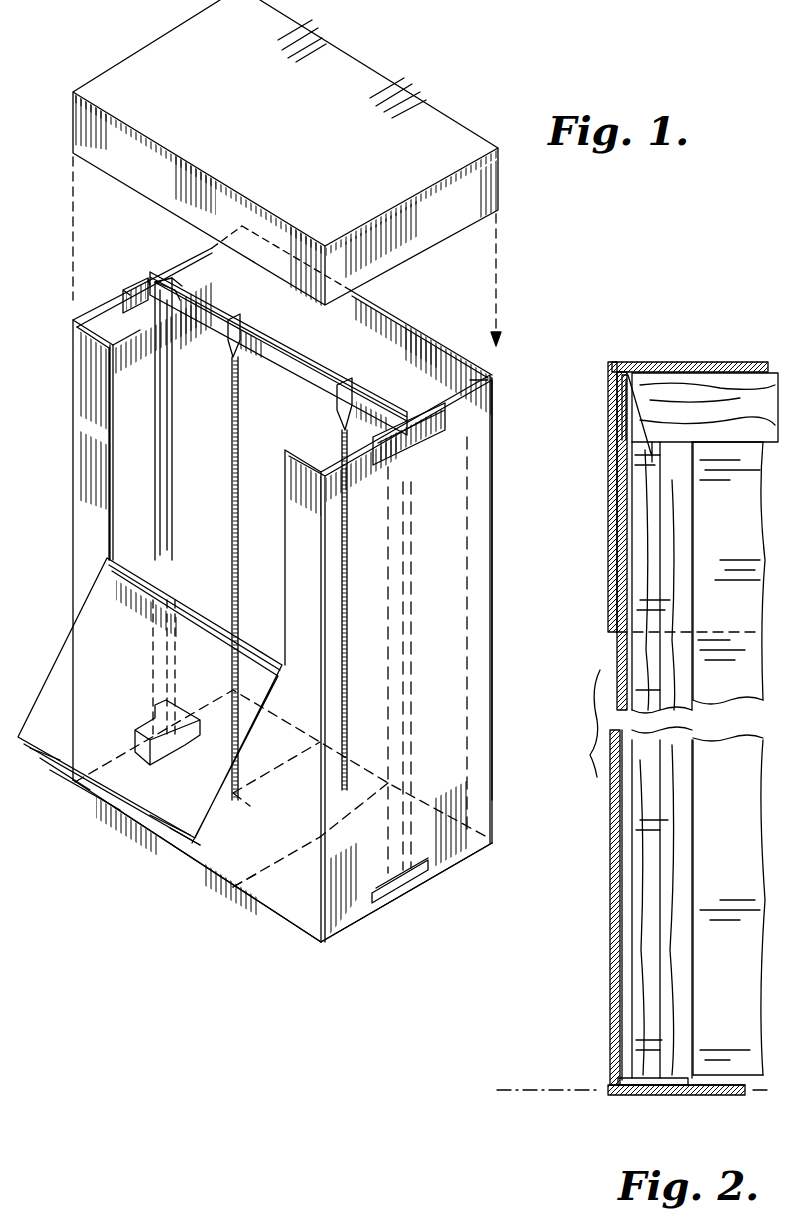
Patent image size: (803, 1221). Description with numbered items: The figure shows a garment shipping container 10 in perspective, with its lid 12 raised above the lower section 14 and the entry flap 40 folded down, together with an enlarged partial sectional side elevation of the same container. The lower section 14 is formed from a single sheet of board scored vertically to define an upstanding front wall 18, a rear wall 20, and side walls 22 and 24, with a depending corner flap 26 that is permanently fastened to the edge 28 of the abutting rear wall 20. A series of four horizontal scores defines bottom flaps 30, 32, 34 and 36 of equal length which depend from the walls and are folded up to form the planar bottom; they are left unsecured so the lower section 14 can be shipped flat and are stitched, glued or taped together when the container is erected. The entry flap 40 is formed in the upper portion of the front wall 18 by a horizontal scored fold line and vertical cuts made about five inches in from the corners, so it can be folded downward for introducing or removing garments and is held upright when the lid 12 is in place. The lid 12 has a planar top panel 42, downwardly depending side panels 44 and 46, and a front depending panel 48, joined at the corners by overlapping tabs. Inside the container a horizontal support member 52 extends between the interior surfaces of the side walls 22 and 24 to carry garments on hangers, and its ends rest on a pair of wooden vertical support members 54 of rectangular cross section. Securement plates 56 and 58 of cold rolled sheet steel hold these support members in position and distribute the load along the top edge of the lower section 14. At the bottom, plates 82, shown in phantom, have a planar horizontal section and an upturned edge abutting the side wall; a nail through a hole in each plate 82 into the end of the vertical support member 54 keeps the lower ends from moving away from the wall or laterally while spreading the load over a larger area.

In FIG. 1, the container assembly 10 is at (320, 944).
In FIG. 1, the lid 12 is at (287, 173).
In FIG. 2, the lid 12 is at (672, 483).
In FIG. 1, the lower section 14 is at (197, 857).
In FIG. 1, the front wall 18 is at (85, 523).
In FIG. 1, the rear wall 20 is at (404, 381).
In FIG. 1, the side wall 22 is at (478, 574).
In FIG. 1, the side wall 24 is at (244, 299).
In FIG. 2, the side wall 24 is at (610, 868).
In FIG. 1, the corner flap 26 is at (458, 380).
In FIG. 1, the edge 28 is at (494, 416).
In FIG. 1, the bottom flap 30 is at (308, 901).
In FIG. 1, the bottom flap 32 is at (286, 759).
In FIG. 2, the bottom flap 32 is at (722, 1080).
In FIG. 1, the bottom flap 34 is at (258, 851).
In FIG. 2, the bottom flap 34 is at (692, 1094).
In FIG. 1, the bottom flap 36 is at (314, 807).
In FIG. 1, the entry flap 40 is at (40, 750).
In FIG. 1, the top panel 42 is at (312, 134).
In FIG. 1, the side panel 44 is at (470, 227).
In FIG. 2, the side panel 46 is at (607, 510).
In FIG. 1, the front depending panel 48 is at (146, 171).
In FIG. 1, the horizontal support member 52 is at (270, 358).
In FIG. 2, the horizontal support member 52 is at (732, 413).
In FIG. 1, the vertical support member 54 is at (180, 561).
In FIG. 2, the vertical support member 54 is at (680, 583).
In FIG. 1, the securement plate 56 is at (130, 287).
In FIG. 2, the securement plate 56 is at (620, 437).
In FIG. 1, the securement plate 58 is at (428, 440).
In FIG. 2, the plate 82 is at (686, 1076).